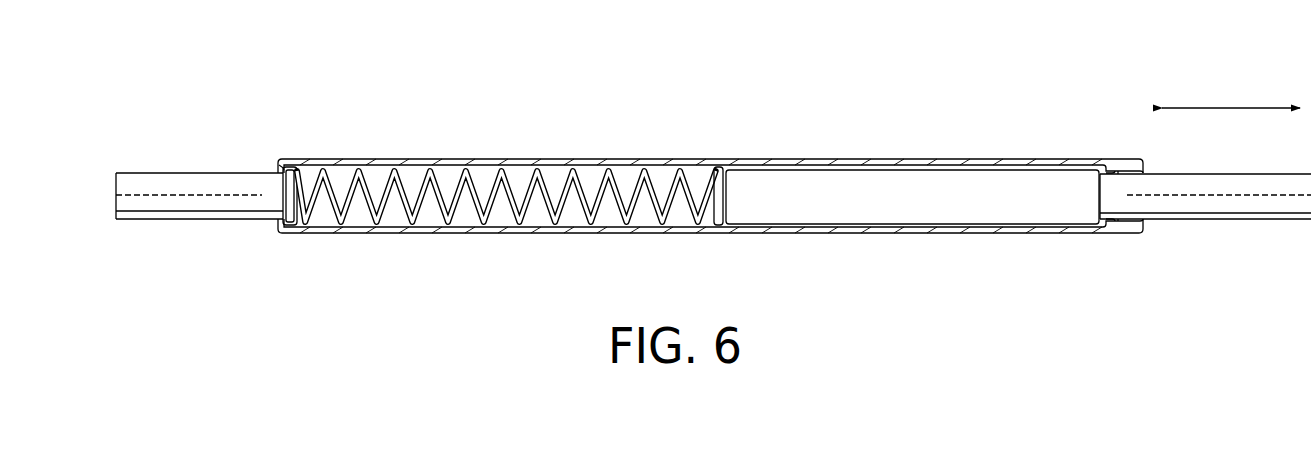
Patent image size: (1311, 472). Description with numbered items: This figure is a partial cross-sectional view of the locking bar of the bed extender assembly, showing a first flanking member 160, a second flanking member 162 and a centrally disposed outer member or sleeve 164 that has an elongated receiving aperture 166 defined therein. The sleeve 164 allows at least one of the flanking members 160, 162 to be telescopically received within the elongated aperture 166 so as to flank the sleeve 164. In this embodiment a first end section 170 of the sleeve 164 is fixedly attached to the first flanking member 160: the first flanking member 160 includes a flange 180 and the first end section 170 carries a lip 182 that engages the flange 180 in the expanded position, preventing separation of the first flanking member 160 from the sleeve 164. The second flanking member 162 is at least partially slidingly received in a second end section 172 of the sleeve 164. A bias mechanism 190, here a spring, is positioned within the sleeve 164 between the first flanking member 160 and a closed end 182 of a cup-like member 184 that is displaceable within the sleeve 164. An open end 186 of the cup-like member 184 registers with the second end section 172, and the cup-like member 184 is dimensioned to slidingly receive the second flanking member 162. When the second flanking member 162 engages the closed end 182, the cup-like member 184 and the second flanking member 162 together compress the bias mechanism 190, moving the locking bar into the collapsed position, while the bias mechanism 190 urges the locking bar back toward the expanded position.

The first flanking member 160 is at (181, 226).
The second flanking member 162 is at (1215, 225).
The sleeve 164 is at (797, 106).
The elongated receiving aperture 166 is at (525, 179).
The first end section 170 is at (300, 159).
The second end section 172 is at (1121, 233).
The flange 180 is at (283, 196).
The lip / closed end 182 is at (283, 166).
The cup-like member 184 is at (847, 223).
The open end 186 is at (1117, 169).
The bias mechanism 190 is at (433, 211).